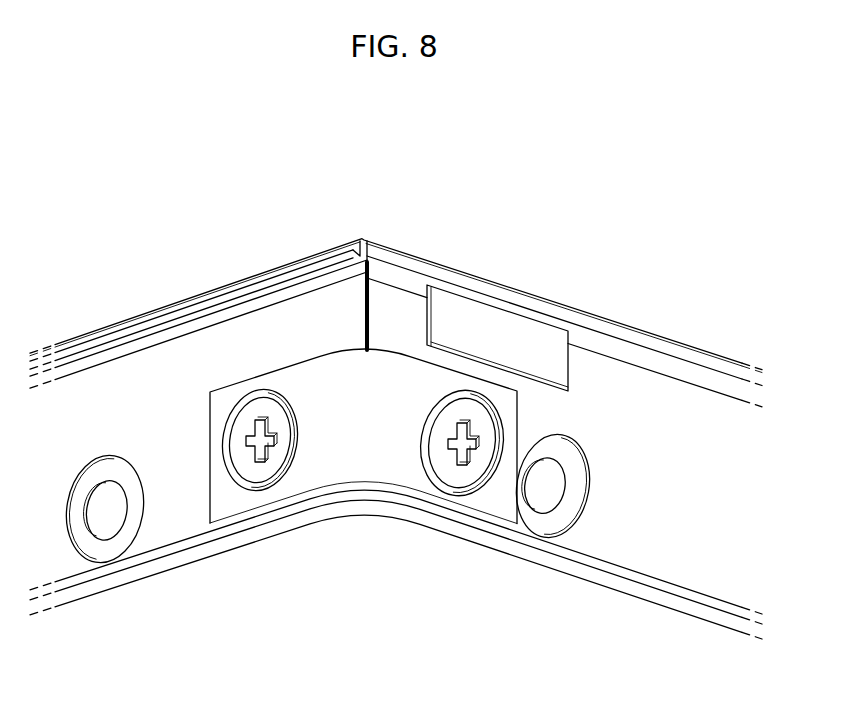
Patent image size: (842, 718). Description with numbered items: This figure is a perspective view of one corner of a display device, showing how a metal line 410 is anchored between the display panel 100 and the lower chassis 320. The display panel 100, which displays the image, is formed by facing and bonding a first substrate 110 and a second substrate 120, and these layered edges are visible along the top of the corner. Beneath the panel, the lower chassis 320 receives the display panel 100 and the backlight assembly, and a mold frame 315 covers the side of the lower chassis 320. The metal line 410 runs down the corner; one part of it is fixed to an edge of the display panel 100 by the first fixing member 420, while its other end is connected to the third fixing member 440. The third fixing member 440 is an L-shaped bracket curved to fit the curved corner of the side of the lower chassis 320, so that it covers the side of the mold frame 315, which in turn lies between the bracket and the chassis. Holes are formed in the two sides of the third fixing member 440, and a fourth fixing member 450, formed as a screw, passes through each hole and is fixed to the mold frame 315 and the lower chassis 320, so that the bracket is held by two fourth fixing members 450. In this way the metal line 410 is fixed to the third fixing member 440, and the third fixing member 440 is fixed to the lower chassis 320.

The display panel 100 is at (166, 219).
The first substrate 110 is at (247, 302).
The second substrate 120 is at (192, 300).
The mold frame 315 is at (657, 547).
The lower chassis 320 is at (402, 583).
The metal line 410 is at (367, 313).
The first fixing member 420 is at (387, 270).
The third fixing member 440 is at (327, 455).
The fourth fixing member 450 is at (262, 473).